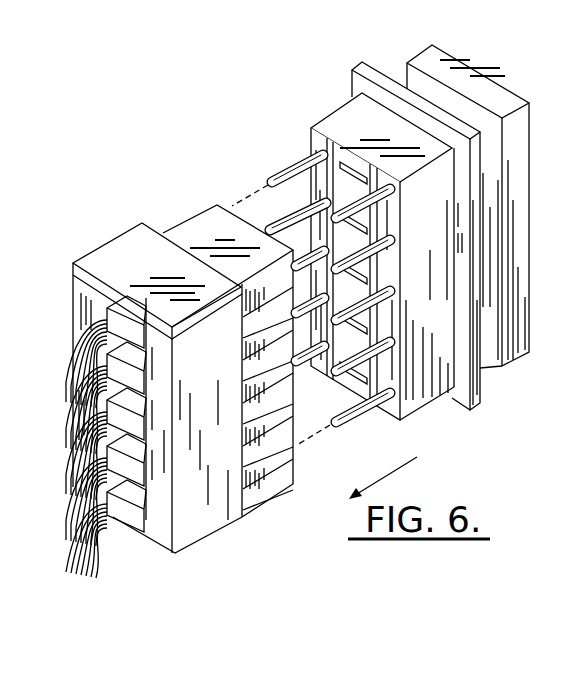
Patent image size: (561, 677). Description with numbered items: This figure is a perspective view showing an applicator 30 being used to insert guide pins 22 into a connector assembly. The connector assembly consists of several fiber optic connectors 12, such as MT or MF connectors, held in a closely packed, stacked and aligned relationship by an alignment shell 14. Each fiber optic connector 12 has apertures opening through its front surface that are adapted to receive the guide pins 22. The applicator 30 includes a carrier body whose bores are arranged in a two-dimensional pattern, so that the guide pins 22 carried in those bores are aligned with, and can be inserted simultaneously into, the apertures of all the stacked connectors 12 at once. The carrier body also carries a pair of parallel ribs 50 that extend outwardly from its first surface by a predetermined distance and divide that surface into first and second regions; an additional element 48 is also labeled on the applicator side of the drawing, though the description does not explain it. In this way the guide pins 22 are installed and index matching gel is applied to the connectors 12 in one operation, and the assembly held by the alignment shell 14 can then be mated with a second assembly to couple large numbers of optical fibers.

The fiber optic connector 12 is at (204, 223).
The alignment shell 14 is at (131, 262).
The guide pin 22 is at (282, 170).
The applicator 30 is at (368, 42).
The contact pins 48 is at (360, 377).
The rib 50 is at (380, 272).